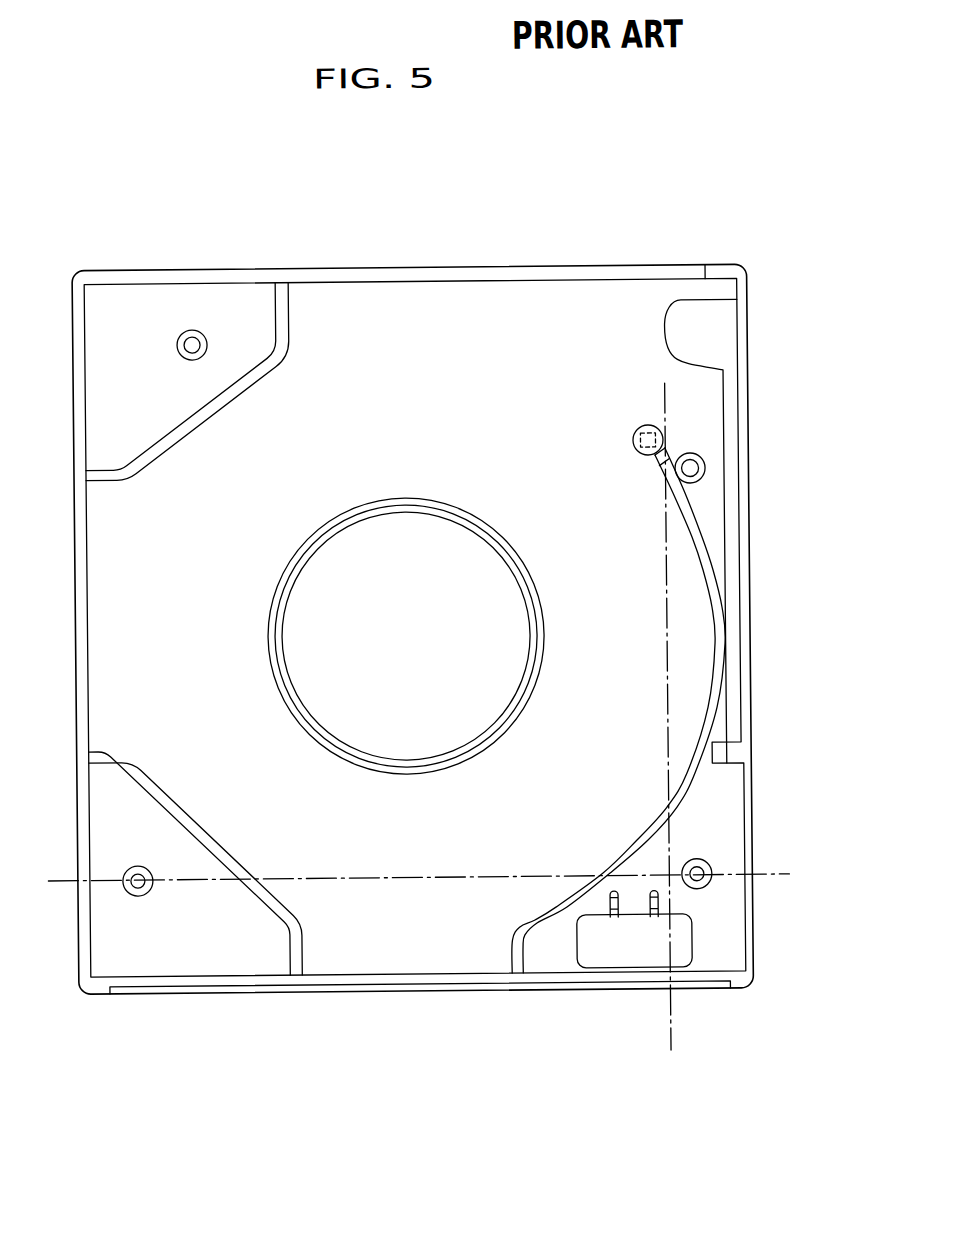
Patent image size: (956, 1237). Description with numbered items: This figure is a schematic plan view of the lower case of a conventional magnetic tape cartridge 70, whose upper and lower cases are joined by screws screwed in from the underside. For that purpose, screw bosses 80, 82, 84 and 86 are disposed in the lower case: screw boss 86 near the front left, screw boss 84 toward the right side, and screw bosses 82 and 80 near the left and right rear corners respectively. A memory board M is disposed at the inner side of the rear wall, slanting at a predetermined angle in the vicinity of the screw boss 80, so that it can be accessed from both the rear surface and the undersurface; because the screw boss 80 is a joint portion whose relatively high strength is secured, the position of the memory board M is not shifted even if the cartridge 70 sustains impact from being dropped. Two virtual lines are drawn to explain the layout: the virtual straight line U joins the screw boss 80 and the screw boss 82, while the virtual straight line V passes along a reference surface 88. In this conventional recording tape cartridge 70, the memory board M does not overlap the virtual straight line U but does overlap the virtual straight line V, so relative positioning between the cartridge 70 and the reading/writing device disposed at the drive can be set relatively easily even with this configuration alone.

The magnetic tape cartridge 70 is at (552, 200).
The screw boss 86 is at (196, 328).
The reference surface 88 is at (635, 442).
The screw boss 84 is at (707, 470).
The screw boss 82 is at (136, 894).
The screw boss 80 is at (706, 888).
The virtual straight line U is at (710, 869).
The virtual straight line V is at (672, 1003).
The memory board M is at (614, 957).